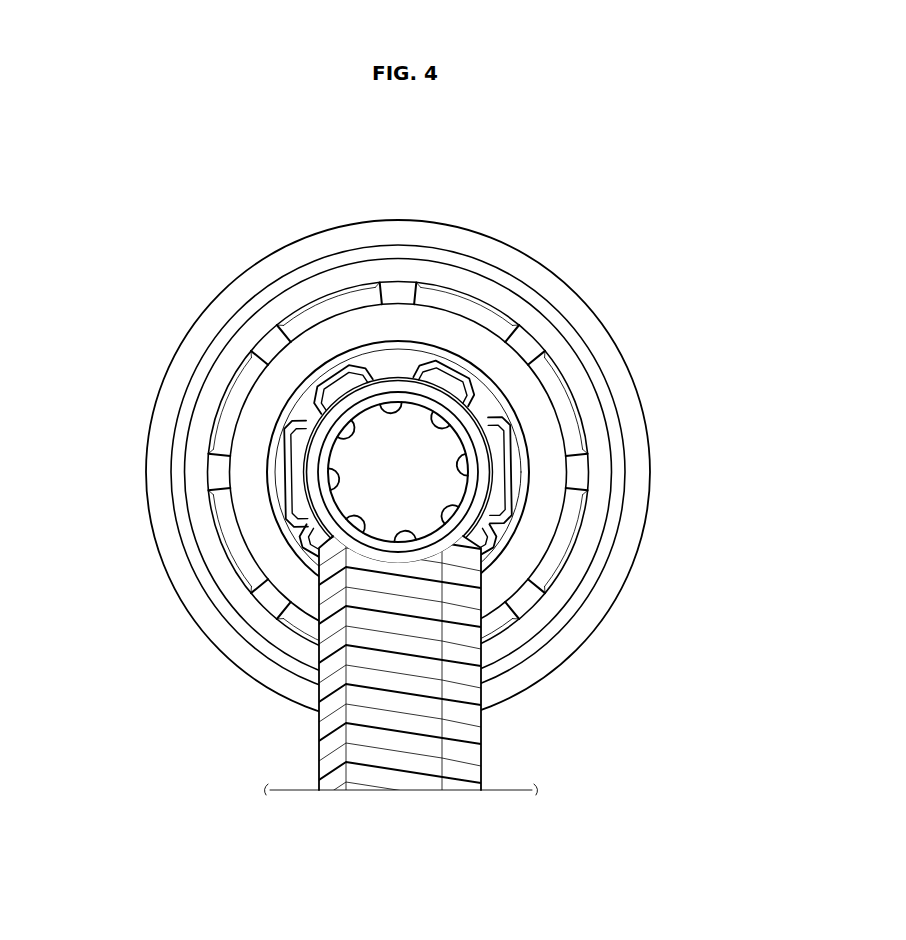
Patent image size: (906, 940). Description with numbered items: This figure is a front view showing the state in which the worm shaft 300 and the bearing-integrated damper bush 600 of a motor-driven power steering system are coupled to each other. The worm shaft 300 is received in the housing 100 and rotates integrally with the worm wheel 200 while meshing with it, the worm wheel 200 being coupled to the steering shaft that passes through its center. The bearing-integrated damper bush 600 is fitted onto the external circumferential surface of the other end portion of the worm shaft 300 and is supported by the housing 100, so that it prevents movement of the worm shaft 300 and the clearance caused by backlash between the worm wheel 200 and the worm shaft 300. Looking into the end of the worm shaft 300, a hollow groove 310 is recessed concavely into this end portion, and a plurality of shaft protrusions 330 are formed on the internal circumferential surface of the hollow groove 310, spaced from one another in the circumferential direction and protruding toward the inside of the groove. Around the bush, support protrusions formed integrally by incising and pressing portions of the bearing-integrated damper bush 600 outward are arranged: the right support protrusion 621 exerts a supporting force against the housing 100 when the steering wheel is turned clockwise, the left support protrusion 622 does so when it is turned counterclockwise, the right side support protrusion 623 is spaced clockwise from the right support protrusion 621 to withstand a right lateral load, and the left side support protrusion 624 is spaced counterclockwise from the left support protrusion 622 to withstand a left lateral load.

The housing 100 is at (398, 229).
The worm wheel 200 is at (388, 735).
The worm shaft 300 is at (488, 467).
The hollow groove 310 is at (413, 459).
The shaft protrusions 330 is at (361, 522).
The bearing-integrated damper bush 600 is at (384, 368).
The right support protrusion 621 is at (453, 366).
The left support protrusion 622 is at (347, 369).
The right side support protrusion 623 is at (513, 502).
The left side support protrusion 624 is at (288, 446).